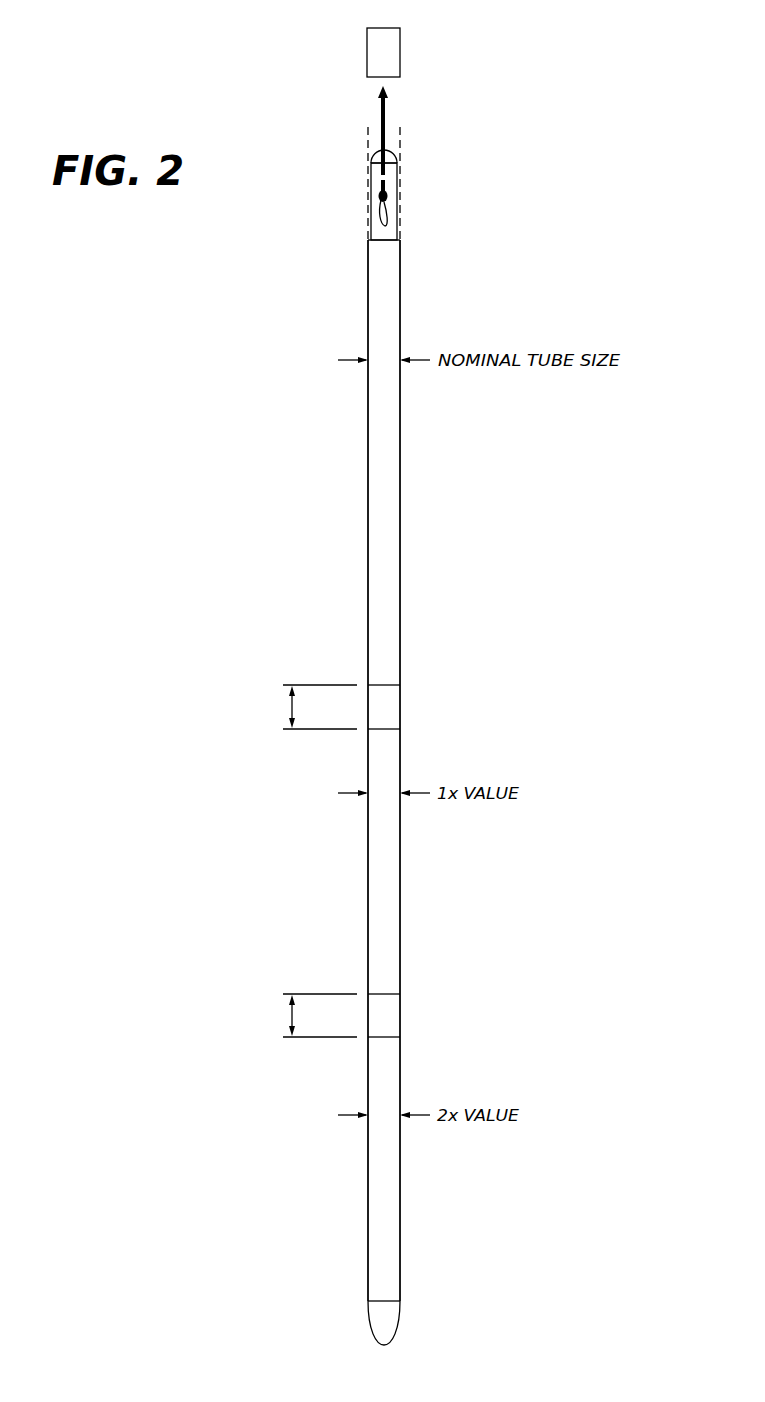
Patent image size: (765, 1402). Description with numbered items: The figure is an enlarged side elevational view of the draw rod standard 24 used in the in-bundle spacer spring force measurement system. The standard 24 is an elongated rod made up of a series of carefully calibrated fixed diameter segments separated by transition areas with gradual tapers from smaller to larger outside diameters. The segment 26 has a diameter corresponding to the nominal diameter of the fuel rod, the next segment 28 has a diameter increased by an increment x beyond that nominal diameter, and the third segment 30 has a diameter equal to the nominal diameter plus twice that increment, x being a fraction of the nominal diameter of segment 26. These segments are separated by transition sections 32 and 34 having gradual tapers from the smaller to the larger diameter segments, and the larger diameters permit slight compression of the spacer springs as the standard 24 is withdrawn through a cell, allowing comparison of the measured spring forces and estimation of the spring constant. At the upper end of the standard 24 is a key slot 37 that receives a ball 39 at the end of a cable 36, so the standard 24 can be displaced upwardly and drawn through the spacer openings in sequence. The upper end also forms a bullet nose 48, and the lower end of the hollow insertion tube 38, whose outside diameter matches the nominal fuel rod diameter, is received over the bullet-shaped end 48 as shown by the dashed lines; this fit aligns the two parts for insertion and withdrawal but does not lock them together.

The draw rod standard 24 is at (368, 625).
The segment 26 is at (385, 538).
The segment 28 is at (385, 905).
The segment 30 is at (385, 1208).
The transition section 32 is at (385, 705).
The transition section 34 is at (385, 1010).
The cable 36 is at (382, 128).
The key slot 37 is at (380, 222).
The insertion tube 38 is at (372, 57).
The ball 39 is at (388, 214).
The bullet nose 48 is at (378, 182).